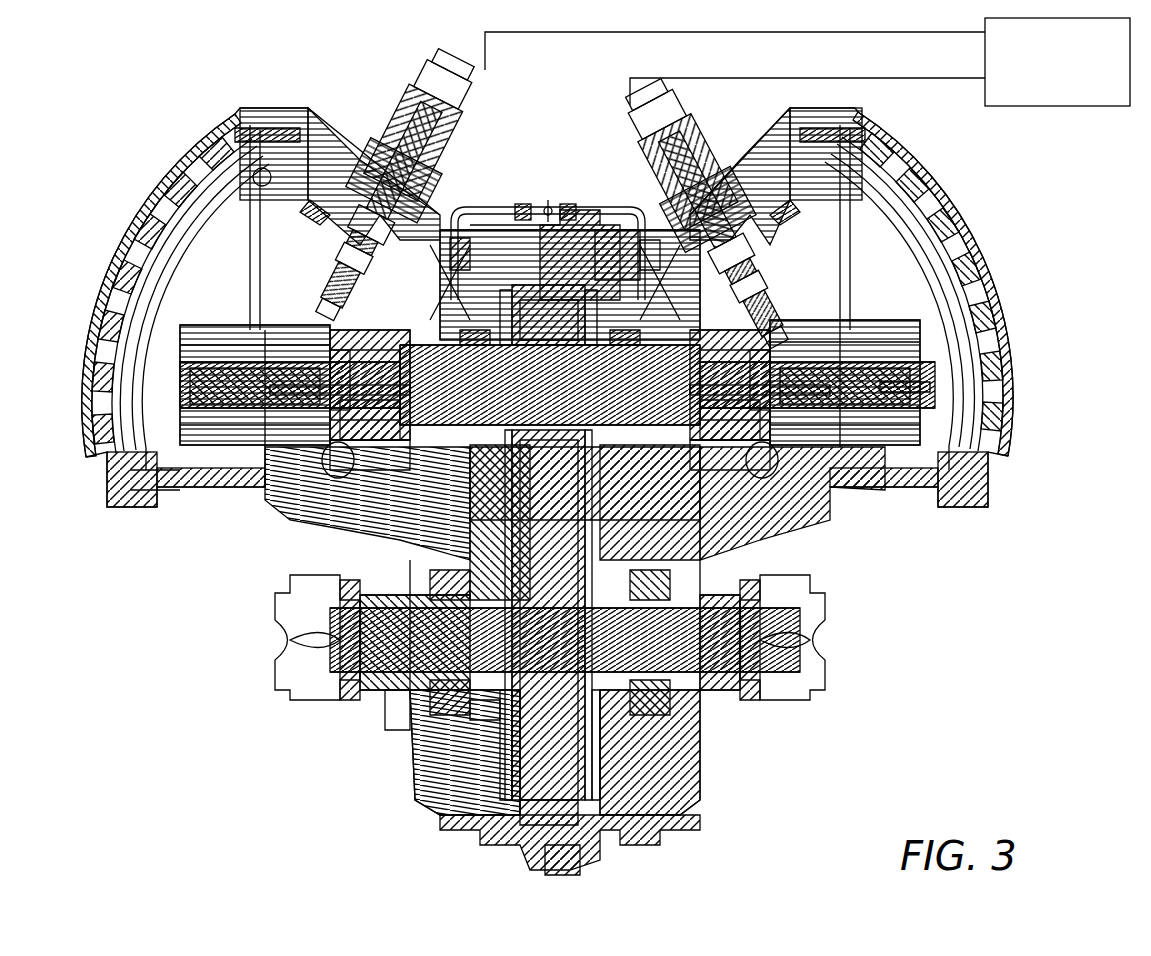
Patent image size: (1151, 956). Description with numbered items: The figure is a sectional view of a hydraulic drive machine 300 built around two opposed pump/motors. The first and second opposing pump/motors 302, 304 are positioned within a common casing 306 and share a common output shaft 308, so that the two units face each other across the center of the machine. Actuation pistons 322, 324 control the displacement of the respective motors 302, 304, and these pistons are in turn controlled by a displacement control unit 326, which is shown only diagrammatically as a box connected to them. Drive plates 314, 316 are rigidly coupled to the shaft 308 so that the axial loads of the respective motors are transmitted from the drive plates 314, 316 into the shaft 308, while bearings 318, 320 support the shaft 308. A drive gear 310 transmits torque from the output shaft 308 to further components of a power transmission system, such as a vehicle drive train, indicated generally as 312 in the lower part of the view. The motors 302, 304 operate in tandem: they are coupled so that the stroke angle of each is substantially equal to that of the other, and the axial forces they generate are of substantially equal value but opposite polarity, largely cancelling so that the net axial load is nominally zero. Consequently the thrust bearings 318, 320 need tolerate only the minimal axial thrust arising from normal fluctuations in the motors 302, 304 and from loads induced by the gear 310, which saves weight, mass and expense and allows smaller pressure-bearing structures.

The drive machine 300 is at (213, 72).
The first pump/motor 302 is at (310, 295).
The second pump/motor 304 is at (865, 255).
The common casing 306 is at (287, 105).
The common output shaft 308 is at (640, 405).
The drive gear 310 is at (528, 300).
The vehicle drive train 312 is at (372, 740).
The first drive plate 314 is at (385, 432).
The second drive plate 316 is at (700, 440).
The first thrust bearing 318 is at (492, 250).
The second thrust bearing 320 is at (620, 325).
The first actuation piston 322 is at (392, 152).
The second actuation piston 324 is at (720, 190).
The displacement control unit 326 is at (1052, 110).